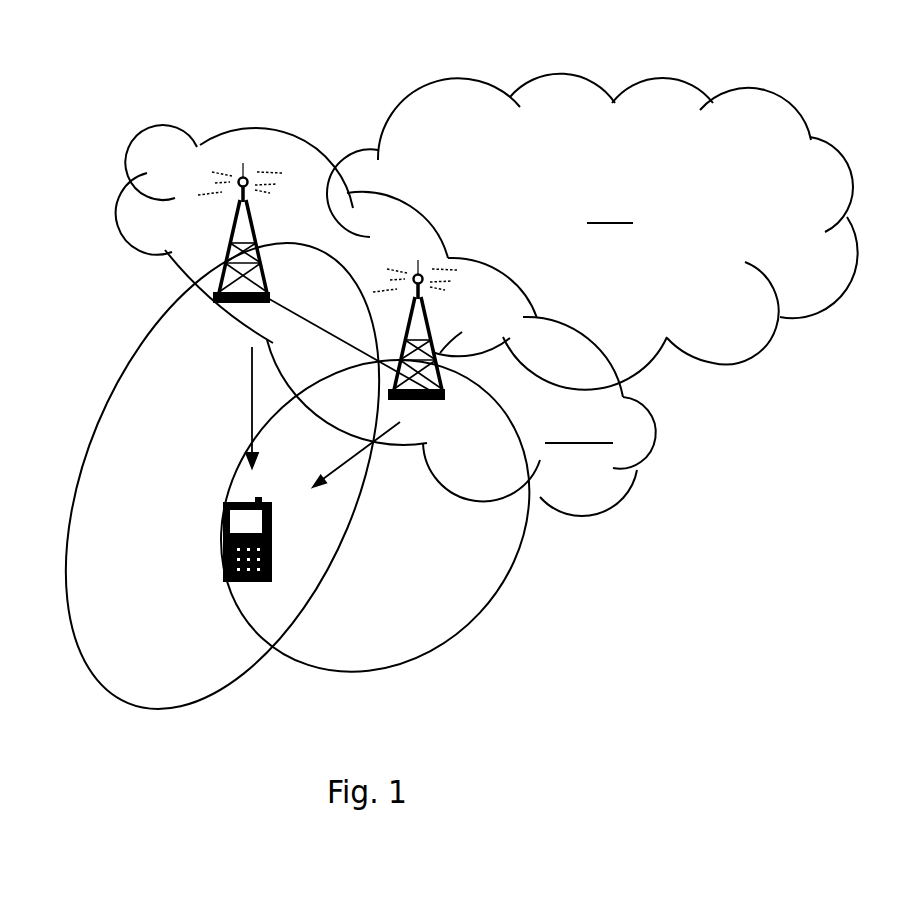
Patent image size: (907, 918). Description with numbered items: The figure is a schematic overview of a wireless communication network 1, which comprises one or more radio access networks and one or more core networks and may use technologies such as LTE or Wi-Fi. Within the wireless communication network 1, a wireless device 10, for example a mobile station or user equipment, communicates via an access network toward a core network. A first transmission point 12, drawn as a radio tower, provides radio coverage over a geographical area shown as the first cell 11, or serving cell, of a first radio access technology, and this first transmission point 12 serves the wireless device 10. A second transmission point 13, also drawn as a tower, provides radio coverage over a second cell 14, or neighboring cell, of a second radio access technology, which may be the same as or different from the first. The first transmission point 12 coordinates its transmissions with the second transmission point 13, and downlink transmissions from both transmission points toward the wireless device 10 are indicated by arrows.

The wireless communication network 1 is at (86, 89).
The wireless device 10 is at (223, 568).
The first cell 11 is at (167, 481).
The first transmission point 12 is at (258, 233).
The second transmission point 13 is at (434, 330).
The second cell 14 is at (427, 498).